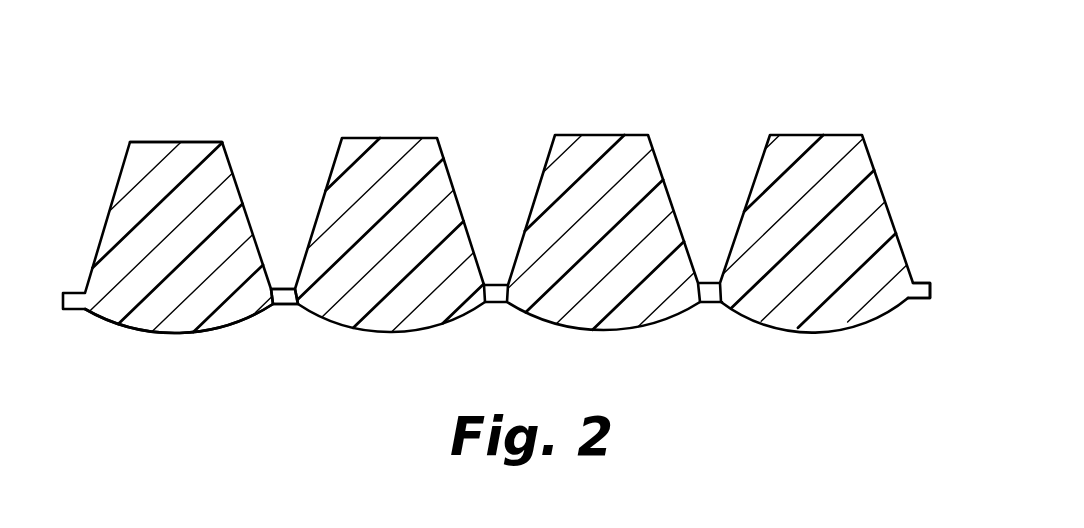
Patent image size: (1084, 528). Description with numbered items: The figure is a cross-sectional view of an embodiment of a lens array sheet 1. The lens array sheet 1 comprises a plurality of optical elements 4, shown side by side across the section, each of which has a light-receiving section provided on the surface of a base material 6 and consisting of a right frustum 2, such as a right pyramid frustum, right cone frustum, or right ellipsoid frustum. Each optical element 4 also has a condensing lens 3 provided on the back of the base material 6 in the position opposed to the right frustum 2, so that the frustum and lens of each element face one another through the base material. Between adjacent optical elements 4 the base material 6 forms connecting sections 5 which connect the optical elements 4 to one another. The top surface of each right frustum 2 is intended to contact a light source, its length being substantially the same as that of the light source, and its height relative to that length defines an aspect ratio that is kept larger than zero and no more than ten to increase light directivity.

The lens array sheet 1 is at (778, 87).
The right frustum 2 is at (192, 141).
The condensing lens 3 is at (165, 334).
The optical element 4 is at (908, 362).
The connecting section 5 is at (287, 288).
The base material 6 is at (931, 292).